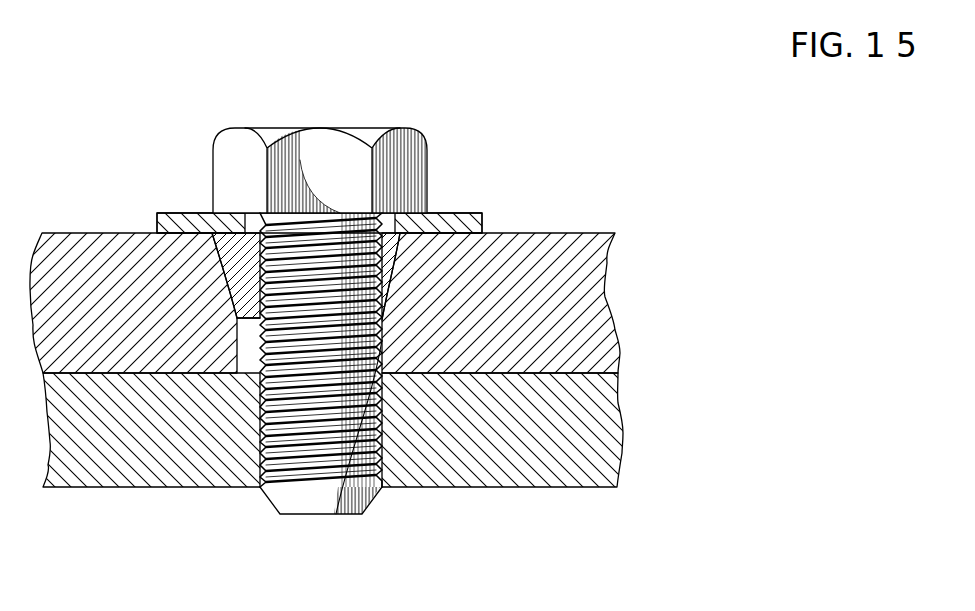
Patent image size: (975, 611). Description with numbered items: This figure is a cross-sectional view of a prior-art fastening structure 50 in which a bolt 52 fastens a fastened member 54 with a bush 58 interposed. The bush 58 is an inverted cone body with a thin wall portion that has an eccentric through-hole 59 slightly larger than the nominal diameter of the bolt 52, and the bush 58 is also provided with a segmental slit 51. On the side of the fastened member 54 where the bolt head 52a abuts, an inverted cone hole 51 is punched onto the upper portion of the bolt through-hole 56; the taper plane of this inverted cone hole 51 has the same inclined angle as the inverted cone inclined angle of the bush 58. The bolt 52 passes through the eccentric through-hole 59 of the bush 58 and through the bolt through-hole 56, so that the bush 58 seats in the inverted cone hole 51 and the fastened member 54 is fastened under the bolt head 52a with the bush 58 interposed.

The fastening structure 50 is at (366, 209).
The inverted cone hole 51 is at (387, 295).
The bolt 52 is at (259, 303).
The bolt head 52a is at (237, 158).
The fastened member 54 is at (585, 287).
The bolt through-hole 56 is at (347, 457).
The bush 58 is at (403, 272).
The eccentric through-hole 59 is at (366, 245).